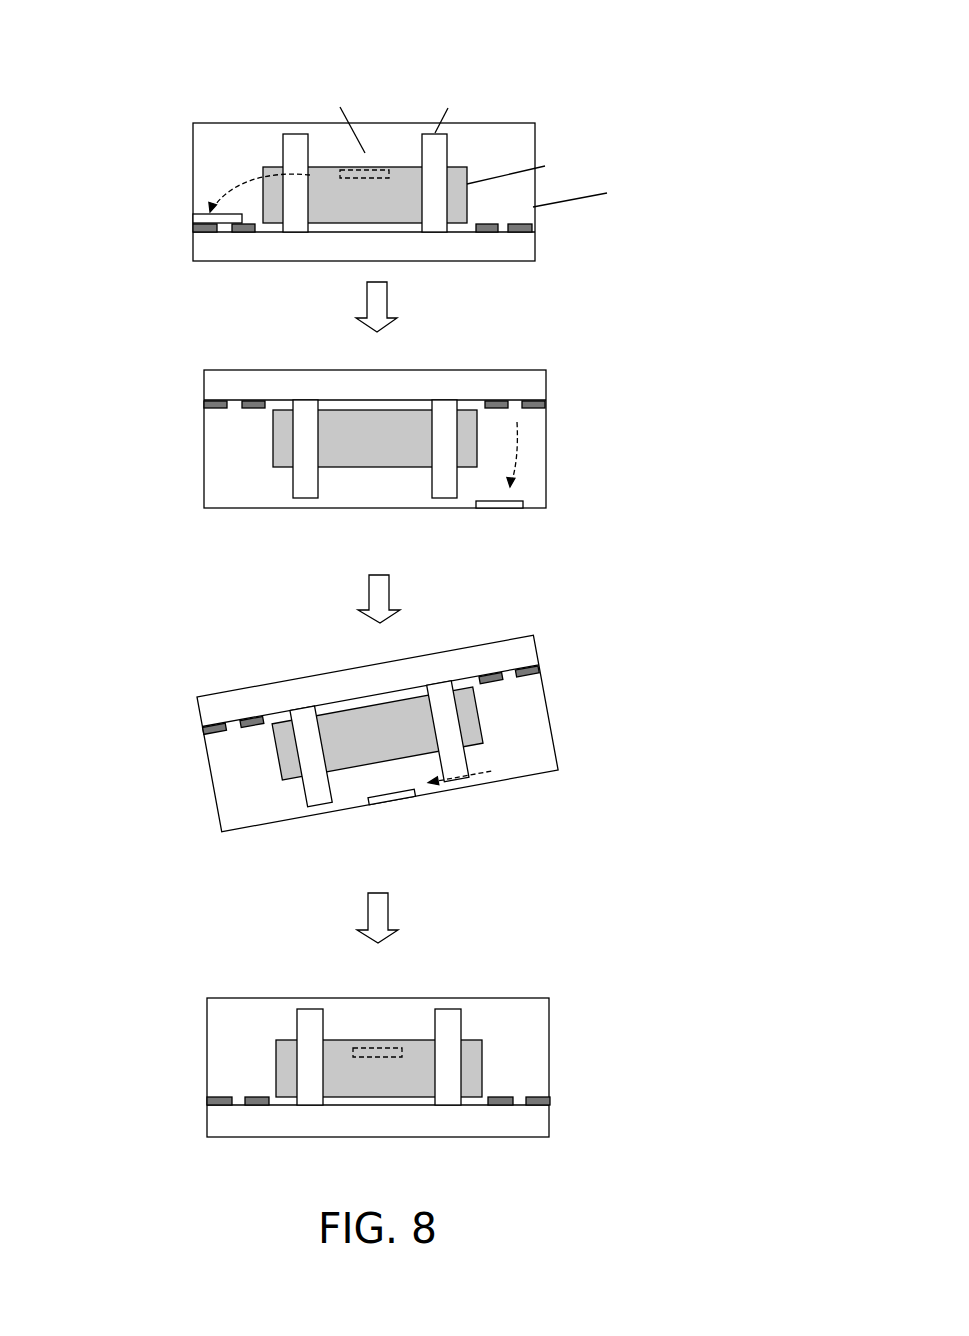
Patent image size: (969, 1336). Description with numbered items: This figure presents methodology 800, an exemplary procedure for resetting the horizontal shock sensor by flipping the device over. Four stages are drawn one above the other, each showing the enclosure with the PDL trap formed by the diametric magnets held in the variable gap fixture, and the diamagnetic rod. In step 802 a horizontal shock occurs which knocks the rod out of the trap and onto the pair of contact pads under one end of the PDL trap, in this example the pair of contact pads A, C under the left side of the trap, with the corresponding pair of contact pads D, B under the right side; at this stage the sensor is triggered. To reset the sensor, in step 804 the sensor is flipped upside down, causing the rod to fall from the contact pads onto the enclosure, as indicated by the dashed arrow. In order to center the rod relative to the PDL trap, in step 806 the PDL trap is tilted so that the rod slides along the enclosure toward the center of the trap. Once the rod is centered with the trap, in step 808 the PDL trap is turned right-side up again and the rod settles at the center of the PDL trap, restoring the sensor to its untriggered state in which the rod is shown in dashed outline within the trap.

The methodology 800 is at (676, 36).
The step 802 is at (376, 165).
The step 804 is at (294, 405).
The step 806 is at (300, 715).
The step 808 is at (296, 1026).
The contact pad A is at (205, 232).
The contact pad B is at (533, 232).
The contact pad C is at (247, 232).
The contact pad D is at (490, 232).